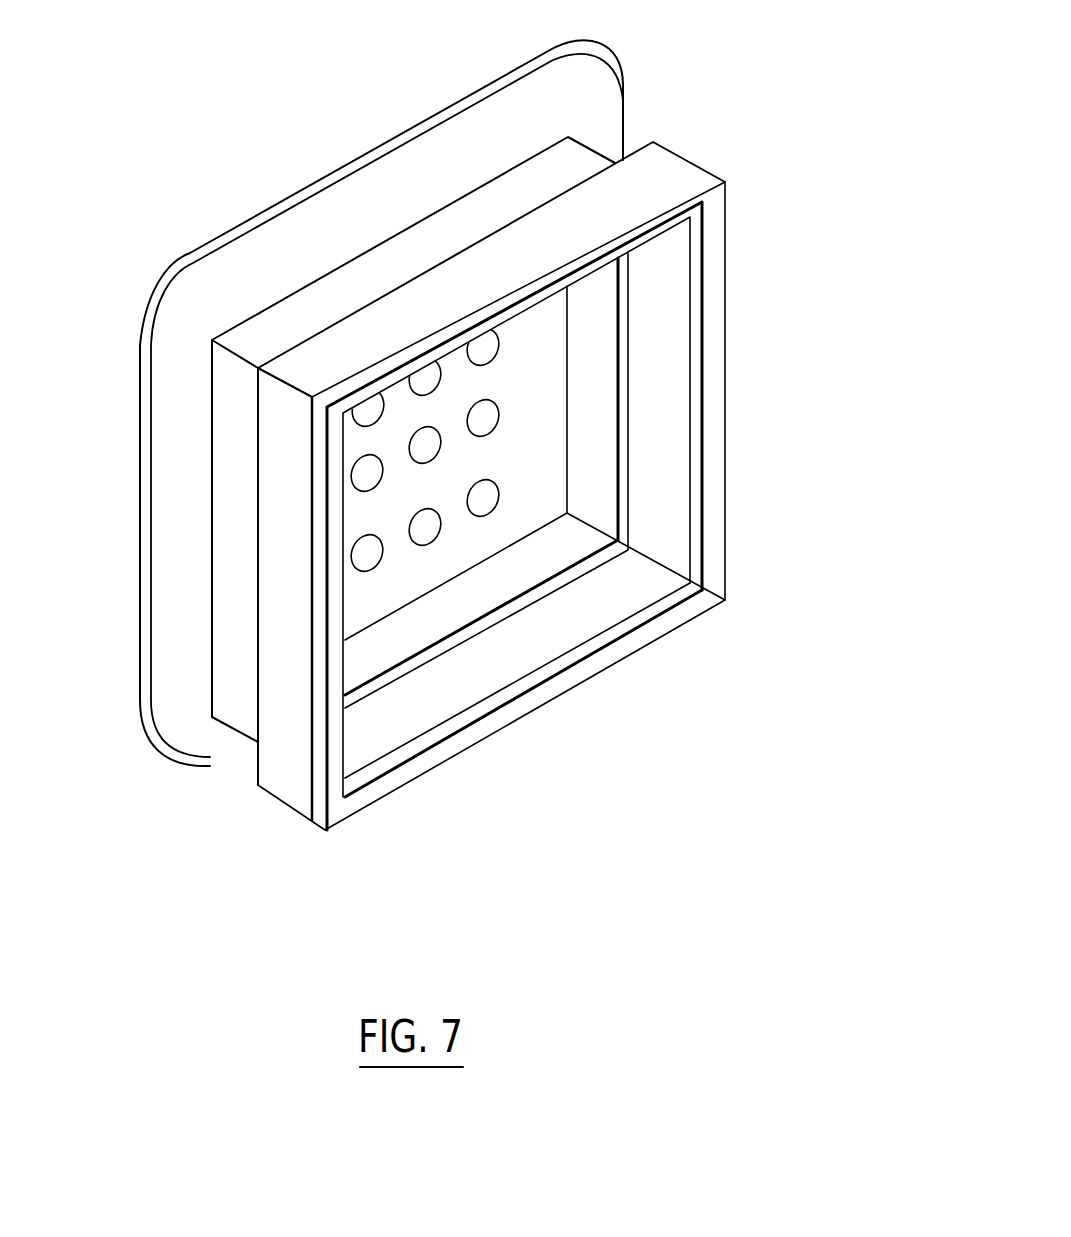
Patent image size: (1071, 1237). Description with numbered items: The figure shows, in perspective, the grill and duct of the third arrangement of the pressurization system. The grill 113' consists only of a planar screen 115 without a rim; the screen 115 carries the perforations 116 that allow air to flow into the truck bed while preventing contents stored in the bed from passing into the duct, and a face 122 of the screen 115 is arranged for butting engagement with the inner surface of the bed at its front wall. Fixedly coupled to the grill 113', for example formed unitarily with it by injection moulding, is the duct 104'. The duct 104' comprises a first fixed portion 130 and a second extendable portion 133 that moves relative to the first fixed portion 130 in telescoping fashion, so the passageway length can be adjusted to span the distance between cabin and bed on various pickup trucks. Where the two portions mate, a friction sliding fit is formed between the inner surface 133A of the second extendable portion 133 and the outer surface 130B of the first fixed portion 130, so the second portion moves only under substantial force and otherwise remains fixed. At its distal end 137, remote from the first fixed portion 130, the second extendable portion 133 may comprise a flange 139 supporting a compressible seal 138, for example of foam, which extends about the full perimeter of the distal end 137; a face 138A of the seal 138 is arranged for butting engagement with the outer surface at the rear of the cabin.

The duct 104' is at (663, 100).
The grill 113' is at (671, 82).
The screen 115 is at (176, 282).
The perforations 116 is at (490, 512).
The face of the screen 122 is at (296, 230).
The first fixed portion 130 is at (208, 683).
The outer surface of the first portion 130B is at (237, 715).
The second extendable portion 133 is at (282, 801).
The inner surface of the second portion 133A is at (660, 468).
The distal end 137 is at (305, 418).
The compressible seal 138 is at (467, 752).
The face of the seal 138A is at (380, 788).
The flange 139 is at (433, 540).